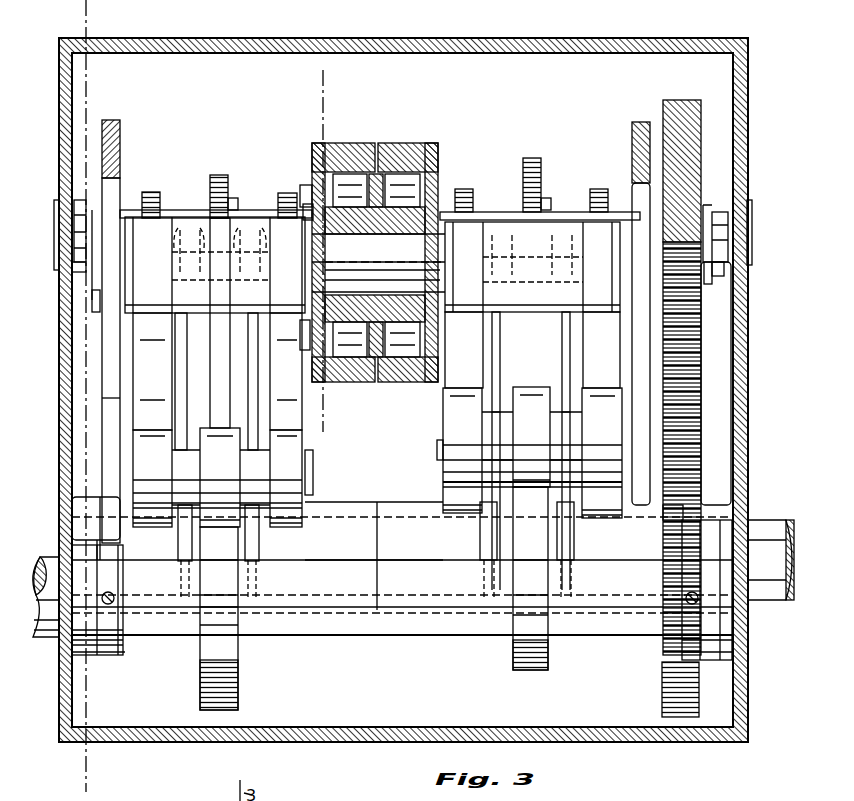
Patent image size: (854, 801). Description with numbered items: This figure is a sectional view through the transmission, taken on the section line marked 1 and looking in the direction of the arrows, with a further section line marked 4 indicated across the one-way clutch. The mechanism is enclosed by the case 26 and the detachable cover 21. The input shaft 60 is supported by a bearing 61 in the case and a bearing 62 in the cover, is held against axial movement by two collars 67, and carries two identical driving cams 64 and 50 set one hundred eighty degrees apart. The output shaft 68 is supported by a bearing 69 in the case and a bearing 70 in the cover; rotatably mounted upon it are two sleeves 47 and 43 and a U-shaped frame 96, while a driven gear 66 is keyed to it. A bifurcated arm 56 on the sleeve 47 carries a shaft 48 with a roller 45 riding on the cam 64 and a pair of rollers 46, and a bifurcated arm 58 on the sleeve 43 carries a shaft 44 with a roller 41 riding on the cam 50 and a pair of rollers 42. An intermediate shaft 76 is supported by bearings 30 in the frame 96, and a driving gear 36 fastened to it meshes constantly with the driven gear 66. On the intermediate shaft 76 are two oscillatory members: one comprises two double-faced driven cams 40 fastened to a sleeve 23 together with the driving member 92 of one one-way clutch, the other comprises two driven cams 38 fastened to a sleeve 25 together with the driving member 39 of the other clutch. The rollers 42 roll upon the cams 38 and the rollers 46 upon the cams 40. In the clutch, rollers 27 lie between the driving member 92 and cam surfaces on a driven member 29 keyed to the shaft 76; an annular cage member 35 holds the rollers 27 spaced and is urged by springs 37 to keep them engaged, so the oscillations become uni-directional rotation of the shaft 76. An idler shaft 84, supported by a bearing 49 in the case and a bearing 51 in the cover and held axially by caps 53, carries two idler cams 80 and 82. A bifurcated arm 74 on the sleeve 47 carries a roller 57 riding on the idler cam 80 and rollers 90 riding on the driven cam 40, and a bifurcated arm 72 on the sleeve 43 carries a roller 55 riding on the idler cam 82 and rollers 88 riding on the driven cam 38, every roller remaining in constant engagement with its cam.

The section line 1- 1 is at (78, 769).
The section line 4- 4 is at (334, 428).
The detachable cover 21 is at (62, 89).
The sleeve 23 is at (191, 219).
The sleeve 25 is at (507, 221).
The case 26 is at (215, 47).
The rollers 27 is at (358, 176).
The driven member 29 is at (366, 236).
The bearings 30 is at (706, 350).
The cage member 35 is at (316, 181).
The driving gear 36 is at (678, 101).
The springs 37 is at (306, 208).
The double-faced driven cams 38 is at (560, 354).
The driving member 39 is at (410, 151).
The double-faced driven cams 40 is at (262, 338).
The roller 41 is at (524, 392).
The rollers 42 is at (445, 474).
The sleeve 43 is at (393, 505).
The shaft 44 is at (437, 453).
The roller 45 is at (218, 428).
The rollers 46 is at (153, 528).
The sleeve 47 is at (346, 506).
The shaft 48 is at (313, 466).
The bearing 49 is at (716, 278).
The driving cam 50 is at (531, 672).
The bearing 51 is at (73, 225).
The caps 53 is at (60, 270).
The roller 55 is at (543, 203).
The bifurcated arm 56 is at (181, 556).
The roller 57 is at (231, 208).
The bifurcated arm 58 is at (492, 548).
The input shaft 60 is at (48, 632).
The bearing 61 is at (718, 663).
The bearing 62 is at (82, 656).
The driving cam 64 is at (240, 690).
The driven gear 66 is at (662, 698).
The collars 67 is at (124, 650).
The output shaft 68 is at (763, 520).
The bearing 69 is at (722, 508).
The bearing 70 is at (80, 497).
The bifurcated arm 72 is at (502, 339).
The bifurcated arm 74 is at (190, 361).
The intermediate shaft 76 is at (96, 302).
The idler cam 80 is at (219, 178).
The idler cam 82 is at (534, 160).
The idler shaft 84 is at (85, 207).
The rollers 88 is at (464, 189).
The rollers 90 is at (152, 192).
The driving member 92 is at (340, 148).
The support plate 96 is at (102, 402).